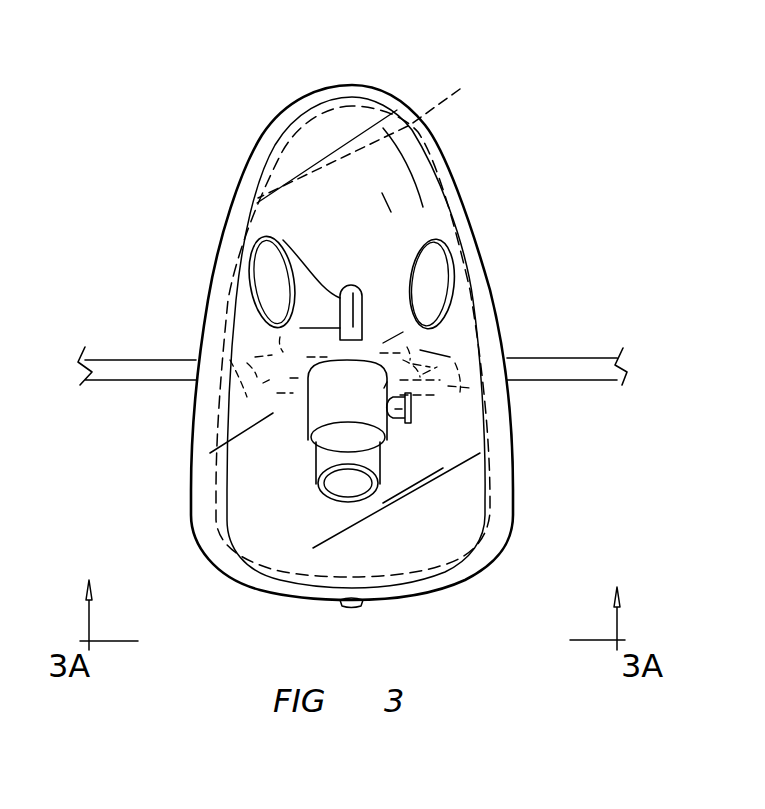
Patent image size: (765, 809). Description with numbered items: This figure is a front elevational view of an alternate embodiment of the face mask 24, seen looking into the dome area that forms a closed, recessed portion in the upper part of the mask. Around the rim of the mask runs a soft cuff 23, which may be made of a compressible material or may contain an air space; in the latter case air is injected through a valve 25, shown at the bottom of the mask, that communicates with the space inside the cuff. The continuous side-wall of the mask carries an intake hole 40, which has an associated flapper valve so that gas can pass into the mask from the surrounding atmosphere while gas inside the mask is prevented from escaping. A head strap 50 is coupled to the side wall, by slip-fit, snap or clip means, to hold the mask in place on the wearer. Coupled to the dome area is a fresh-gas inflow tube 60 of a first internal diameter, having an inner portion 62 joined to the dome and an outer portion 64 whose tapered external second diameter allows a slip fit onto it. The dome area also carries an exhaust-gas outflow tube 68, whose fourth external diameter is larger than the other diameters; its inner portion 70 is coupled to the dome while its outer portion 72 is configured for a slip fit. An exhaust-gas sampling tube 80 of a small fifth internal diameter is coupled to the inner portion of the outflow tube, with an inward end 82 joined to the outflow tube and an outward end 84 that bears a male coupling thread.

The soft cuff 23 is at (461, 88).
The mask 24 is at (377, 253).
The valve 25 is at (352, 608).
The intake hole 40 is at (435, 285).
The head strap 50 is at (588, 362).
The fresh-gas inflow tube 60 is at (280, 238).
The inner portion 62 is at (348, 290).
The outer portion 64 is at (300, 328).
The exhaust-gas outflow tube 68 is at (306, 418).
The inner portion 70 is at (333, 377).
The outer portion 72 is at (322, 480).
The exhaust-gas sampling tube 80 is at (415, 421).
The inward end 82 is at (390, 420).
The outward end 84 is at (412, 405).